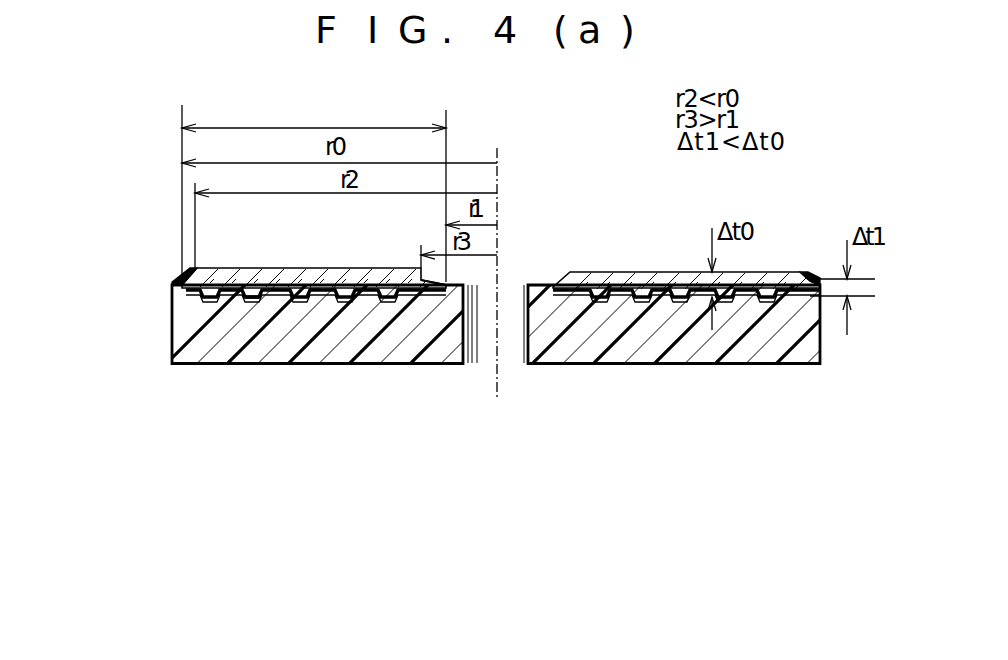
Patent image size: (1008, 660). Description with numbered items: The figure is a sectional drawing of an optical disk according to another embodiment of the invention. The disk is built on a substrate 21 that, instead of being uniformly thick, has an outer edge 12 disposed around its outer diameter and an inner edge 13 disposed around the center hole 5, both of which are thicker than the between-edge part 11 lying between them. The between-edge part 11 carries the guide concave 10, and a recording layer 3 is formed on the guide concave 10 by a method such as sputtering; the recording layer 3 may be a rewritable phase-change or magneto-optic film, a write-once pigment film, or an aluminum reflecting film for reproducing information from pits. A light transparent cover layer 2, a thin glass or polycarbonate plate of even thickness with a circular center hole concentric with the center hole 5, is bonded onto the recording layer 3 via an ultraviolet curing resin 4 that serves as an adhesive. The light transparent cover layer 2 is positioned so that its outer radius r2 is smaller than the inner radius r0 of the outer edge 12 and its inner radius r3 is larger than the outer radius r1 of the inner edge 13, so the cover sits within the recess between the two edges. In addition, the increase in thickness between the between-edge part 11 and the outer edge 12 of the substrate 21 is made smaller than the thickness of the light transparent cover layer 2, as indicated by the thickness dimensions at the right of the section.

The light transparent cover layer 2 is at (244, 280).
The recording layer 3 is at (303, 306).
The ultraviolet curing resin 4 is at (188, 296).
The center hole 5 is at (463, 330).
The guide concave 10 is at (262, 305).
The between-edge part 11 is at (263, 128).
The outer edge 12 is at (172, 284).
The inner edge 13 is at (453, 279).
The substrate 21 is at (637, 333).